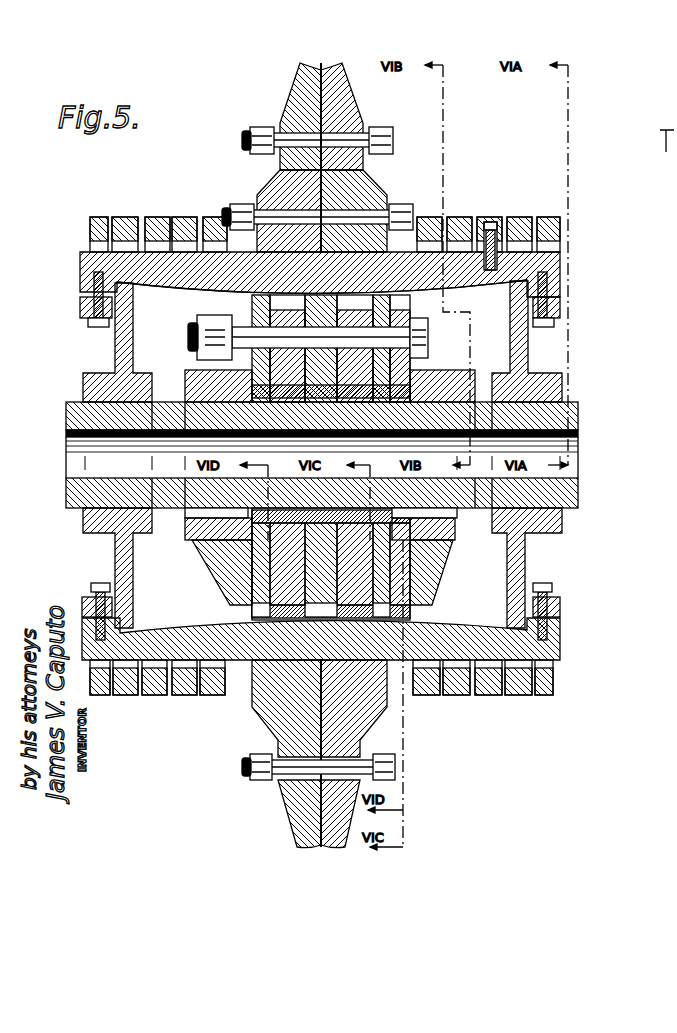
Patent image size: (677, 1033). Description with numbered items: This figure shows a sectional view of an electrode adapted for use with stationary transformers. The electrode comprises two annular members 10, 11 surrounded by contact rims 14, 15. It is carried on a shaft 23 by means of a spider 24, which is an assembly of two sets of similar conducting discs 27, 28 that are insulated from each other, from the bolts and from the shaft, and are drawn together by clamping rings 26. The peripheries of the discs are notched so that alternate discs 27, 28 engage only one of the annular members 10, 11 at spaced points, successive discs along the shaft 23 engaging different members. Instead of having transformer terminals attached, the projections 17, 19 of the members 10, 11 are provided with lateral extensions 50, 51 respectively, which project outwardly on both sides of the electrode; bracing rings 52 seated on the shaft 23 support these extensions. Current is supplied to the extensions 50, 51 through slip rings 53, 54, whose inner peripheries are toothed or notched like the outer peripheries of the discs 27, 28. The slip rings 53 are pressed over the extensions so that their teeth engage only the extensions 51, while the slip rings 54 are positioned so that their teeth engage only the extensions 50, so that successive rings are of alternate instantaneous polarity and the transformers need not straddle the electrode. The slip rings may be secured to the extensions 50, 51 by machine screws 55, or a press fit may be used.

The annular member 10 is at (287, 200).
The annular member 11 is at (352, 190).
The contact rim 14 is at (302, 78).
The contact rim 15 is at (352, 94).
The projection 17 is at (262, 289).
The projection 19 is at (258, 714).
The shaft 23 is at (67, 419).
The spider 24 is at (413, 576).
The clamping ring 26 is at (205, 366).
The disc 27 is at (262, 551).
The disc 28 is at (287, 582).
The lateral extension 50 is at (171, 270).
The lateral extension 51 is at (161, 668).
The bracing ring 52 is at (527, 345).
The slip ring 53 is at (99, 216).
The slip ring 54 is at (129, 216).
The machine screw 55 is at (494, 232).